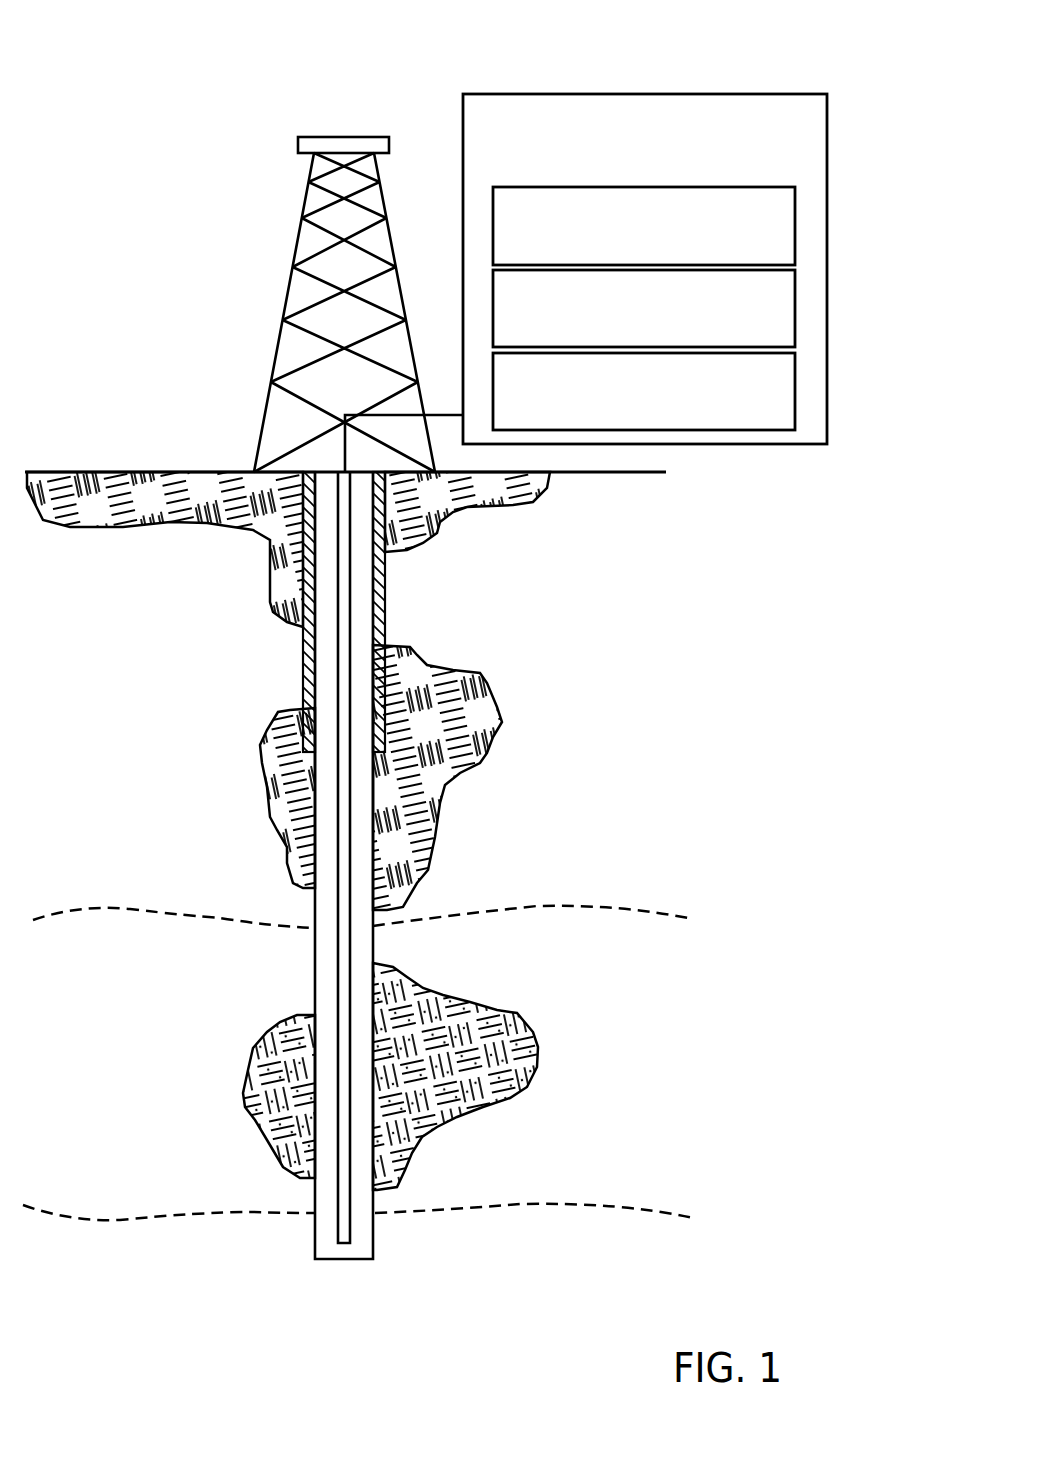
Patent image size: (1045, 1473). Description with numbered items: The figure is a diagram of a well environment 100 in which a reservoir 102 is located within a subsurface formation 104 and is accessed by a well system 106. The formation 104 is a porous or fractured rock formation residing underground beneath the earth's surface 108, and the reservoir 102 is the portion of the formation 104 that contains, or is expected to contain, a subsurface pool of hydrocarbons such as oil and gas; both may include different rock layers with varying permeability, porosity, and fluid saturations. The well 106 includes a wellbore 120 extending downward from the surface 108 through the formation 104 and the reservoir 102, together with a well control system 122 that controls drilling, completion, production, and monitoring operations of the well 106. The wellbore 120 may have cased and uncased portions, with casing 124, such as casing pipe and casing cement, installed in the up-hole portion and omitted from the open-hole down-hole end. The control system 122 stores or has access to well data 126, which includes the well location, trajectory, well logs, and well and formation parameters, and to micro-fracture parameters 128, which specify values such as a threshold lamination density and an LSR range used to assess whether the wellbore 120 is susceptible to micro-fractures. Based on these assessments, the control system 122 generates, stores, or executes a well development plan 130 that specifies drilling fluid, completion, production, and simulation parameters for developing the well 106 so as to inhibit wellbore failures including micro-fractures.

The well environment 100 is at (530, 48).
The reservoir 102 is at (413, 1075).
The subsurface formation 104 is at (462, 732).
The well system 106 is at (220, 325).
The surface 108 is at (585, 475).
The wellbore 120 is at (368, 1285).
The well control system 122 is at (614, 163).
The casing 124 is at (400, 573).
The well data 126 is at (666, 252).
The micro-fracture parameters 128 is at (666, 335).
The well development plan 130 is at (666, 418).